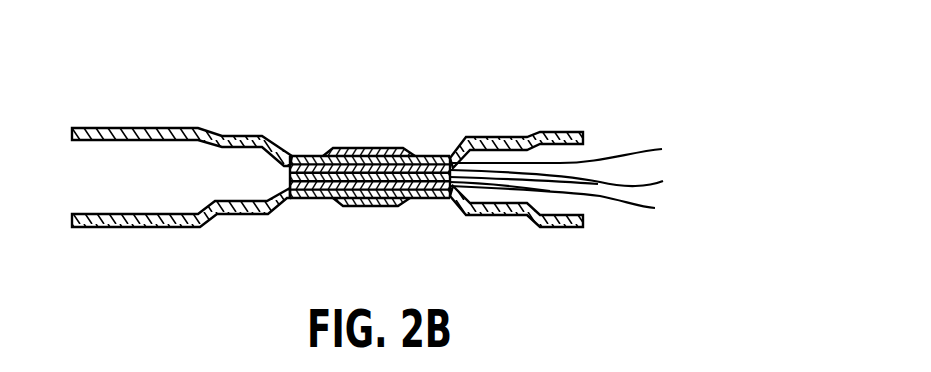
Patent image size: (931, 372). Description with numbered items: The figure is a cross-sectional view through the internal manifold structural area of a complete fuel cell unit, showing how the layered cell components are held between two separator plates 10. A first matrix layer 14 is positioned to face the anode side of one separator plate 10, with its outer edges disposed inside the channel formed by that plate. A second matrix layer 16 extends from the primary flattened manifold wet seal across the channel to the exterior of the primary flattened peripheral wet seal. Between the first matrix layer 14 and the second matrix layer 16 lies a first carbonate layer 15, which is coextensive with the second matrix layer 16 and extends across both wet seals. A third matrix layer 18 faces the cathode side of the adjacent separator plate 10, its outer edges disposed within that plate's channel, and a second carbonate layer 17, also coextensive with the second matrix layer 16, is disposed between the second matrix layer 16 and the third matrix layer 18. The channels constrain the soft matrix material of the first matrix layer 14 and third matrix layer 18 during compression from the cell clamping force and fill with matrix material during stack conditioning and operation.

The separator plate 10 is at (132, 128).
The first matrix layer 14 is at (399, 206).
The first carbonate layer 15 is at (569, 208).
The second matrix layer 16 is at (572, 186).
The second carbonate layer 17 is at (572, 156).
The third matrix layer 18 is at (380, 148).